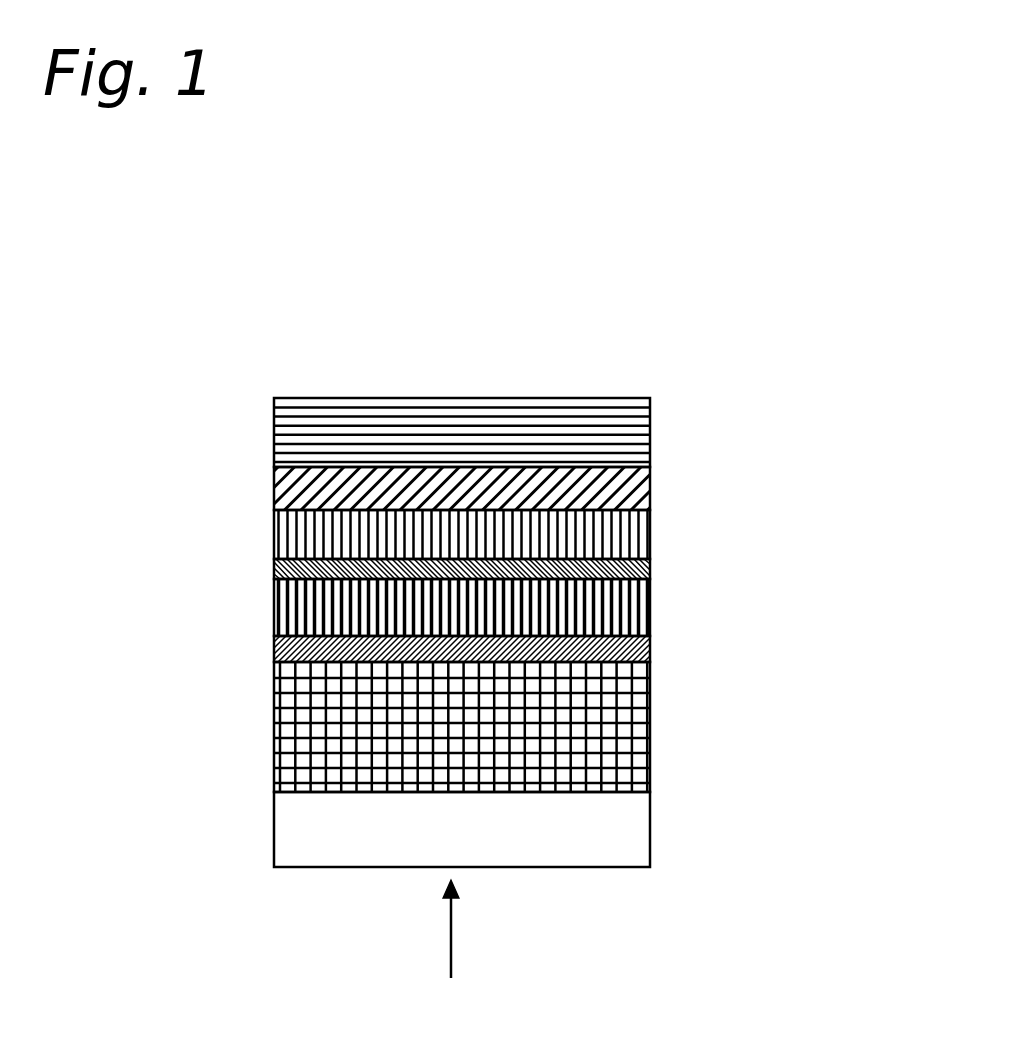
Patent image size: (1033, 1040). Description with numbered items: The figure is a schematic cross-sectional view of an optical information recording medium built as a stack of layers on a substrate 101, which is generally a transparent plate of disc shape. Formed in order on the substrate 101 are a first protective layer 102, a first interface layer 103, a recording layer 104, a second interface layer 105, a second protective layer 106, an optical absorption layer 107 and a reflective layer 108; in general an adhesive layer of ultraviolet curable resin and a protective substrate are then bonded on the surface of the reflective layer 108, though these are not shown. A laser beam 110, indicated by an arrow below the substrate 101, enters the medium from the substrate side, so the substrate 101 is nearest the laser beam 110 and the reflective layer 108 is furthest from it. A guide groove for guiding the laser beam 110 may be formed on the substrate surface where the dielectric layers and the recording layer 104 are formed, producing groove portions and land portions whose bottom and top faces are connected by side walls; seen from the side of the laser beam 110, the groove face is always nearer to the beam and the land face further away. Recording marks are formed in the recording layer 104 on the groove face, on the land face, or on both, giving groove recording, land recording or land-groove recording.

The substrate 101 is at (600, 835).
The first protective layer 102 is at (600, 746).
The first interface layer 103 is at (600, 655).
The recording layer 104 is at (600, 603).
The second interface layer 105 is at (600, 568).
The second protective layer 106 is at (600, 537).
The optical absorption layer 107 is at (602, 493).
The reflective layer 108 is at (600, 448).
The laser beam 110 is at (453, 923).